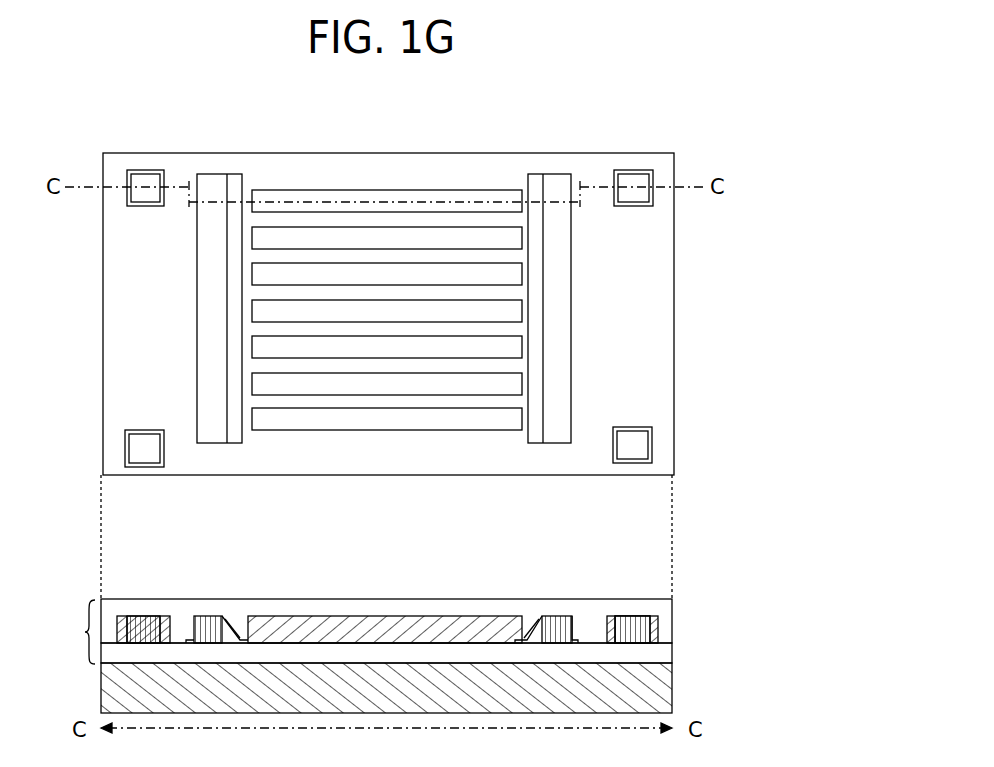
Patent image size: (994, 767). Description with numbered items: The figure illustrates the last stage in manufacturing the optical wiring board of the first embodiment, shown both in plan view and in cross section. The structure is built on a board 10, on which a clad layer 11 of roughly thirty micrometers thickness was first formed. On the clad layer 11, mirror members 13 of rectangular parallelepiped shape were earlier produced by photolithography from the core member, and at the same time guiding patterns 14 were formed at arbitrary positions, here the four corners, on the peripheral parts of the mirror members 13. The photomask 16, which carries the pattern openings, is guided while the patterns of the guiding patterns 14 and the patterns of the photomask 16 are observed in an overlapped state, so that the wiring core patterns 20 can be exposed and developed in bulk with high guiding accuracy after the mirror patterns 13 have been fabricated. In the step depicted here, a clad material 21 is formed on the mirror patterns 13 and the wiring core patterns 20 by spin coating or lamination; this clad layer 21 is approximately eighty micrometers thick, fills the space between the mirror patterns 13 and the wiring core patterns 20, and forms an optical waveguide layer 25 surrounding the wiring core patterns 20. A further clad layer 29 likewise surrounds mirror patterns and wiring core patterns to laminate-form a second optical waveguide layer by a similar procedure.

The board 10 is at (672, 676).
The clad layer 11 is at (672, 648).
The mirror members 13 is at (212, 617).
The guiding patterns 14 is at (143, 181).
The photomask 16 is at (441, 167).
The wiring core patterns 20 is at (361, 615).
The clad layer 21 is at (655, 622).
The optical waveguide layer 25 is at (71, 632).
The clad layer 29 is at (522, 614).